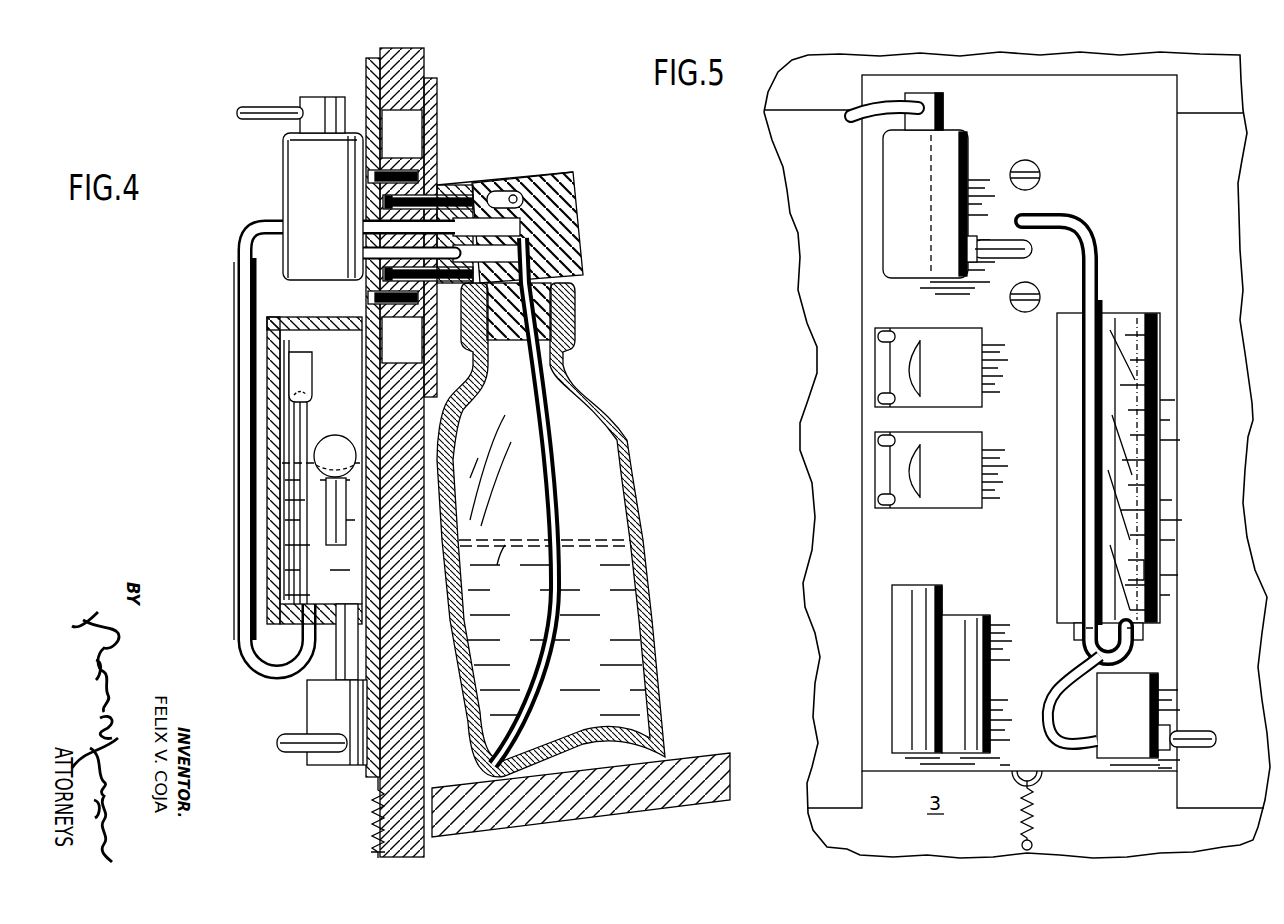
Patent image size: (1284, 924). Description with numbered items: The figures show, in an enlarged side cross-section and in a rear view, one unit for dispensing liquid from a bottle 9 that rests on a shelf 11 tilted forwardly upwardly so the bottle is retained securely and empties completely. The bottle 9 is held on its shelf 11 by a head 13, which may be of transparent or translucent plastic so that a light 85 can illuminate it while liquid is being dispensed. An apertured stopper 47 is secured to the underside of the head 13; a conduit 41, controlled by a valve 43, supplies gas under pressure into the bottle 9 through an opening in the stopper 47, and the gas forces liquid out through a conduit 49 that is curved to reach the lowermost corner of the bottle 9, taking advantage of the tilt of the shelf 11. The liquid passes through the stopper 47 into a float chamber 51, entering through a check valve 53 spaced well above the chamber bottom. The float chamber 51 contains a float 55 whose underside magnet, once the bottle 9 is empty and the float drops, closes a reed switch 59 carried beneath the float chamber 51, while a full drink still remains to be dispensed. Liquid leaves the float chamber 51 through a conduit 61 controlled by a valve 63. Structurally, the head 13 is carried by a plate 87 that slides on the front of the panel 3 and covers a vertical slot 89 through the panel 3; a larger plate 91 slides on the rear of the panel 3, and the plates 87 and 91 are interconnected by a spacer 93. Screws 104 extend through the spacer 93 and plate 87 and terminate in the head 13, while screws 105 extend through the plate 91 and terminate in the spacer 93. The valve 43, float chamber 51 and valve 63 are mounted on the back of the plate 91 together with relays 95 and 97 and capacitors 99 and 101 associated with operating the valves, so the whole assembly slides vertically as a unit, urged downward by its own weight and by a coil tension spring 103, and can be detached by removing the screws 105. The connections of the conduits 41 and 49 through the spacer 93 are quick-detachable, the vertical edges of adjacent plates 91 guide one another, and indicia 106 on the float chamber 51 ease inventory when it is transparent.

In FIG. 4, the panel 3 is at (413, 745).
In FIG. 4, the bottle 9 is at (632, 416).
In FIG. 4, the shelf 11 is at (632, 808).
In FIG. 4, the head 13 is at (575, 210).
In FIG. 4, the conduit 41 is at (268, 107).
In FIG. 5, the conduit 41 is at (857, 106).
In FIG. 4, the valve 43 is at (283, 166).
In FIG. 5, the valve 43 is at (955, 165).
In FIG. 4, the apertured stopper 47 is at (562, 320).
In FIG. 4, the conduit 49 is at (233, 498).
In FIG. 5, the conduit 49 is at (1082, 236).
In FIG. 4, the float chamber 51 is at (268, 345).
In FIG. 5, the float chamber 51 is at (1163, 416).
In FIG. 4, the check valve 53 is at (299, 360).
In FIG. 4, the float 55 is at (340, 446).
In FIG. 4, the reed switch 59 is at (333, 645).
In FIG. 5, the reed switch 59 is at (1148, 629).
In FIG. 4, the conduit 61 is at (293, 753).
In FIG. 5, the conduit 61 is at (1055, 720).
In FIG. 4, the valve 63 is at (307, 708).
In FIG. 5, the valve 63 is at (1136, 686).
In FIG. 4, the light 85 is at (511, 193).
In FIG. 4, the plate 87 is at (437, 147).
In FIG. 4, the vertical slot 89 is at (420, 135).
In FIG. 4, the plate 91 is at (367, 78).
In FIG. 5, the plate 91 is at (1000, 92).
In FIG. 4, the spacer 93 is at (398, 317).
In FIG. 5, the relay 95 is at (968, 386).
In FIG. 5, the relay 97 is at (970, 485).
In FIG. 5, the capacitor 99 is at (905, 632).
In FIG. 5, the capacitor 101 is at (975, 680).
In FIG. 4, the coil tension spring 103 is at (372, 820).
In FIG. 5, the coil tension spring 103 is at (1035, 812).
In FIG. 4, the screw 104 is at (432, 200).
In FIG. 4, the screw 105 is at (370, 177).
In FIG. 5, the screw 105 is at (1039, 182).
In FIG. 5, the indicia 106 is at (1130, 562).